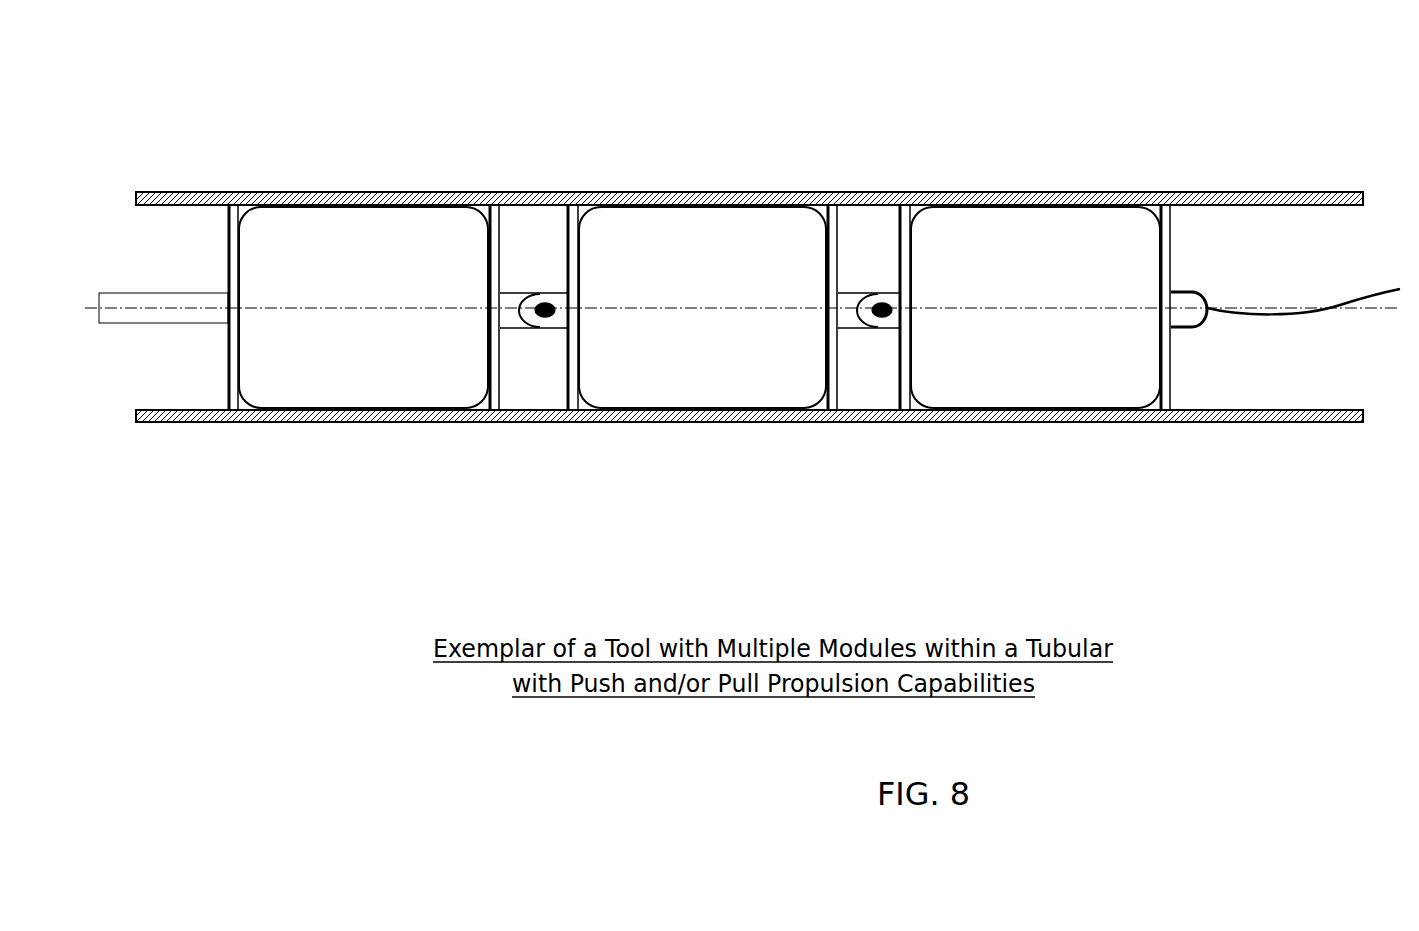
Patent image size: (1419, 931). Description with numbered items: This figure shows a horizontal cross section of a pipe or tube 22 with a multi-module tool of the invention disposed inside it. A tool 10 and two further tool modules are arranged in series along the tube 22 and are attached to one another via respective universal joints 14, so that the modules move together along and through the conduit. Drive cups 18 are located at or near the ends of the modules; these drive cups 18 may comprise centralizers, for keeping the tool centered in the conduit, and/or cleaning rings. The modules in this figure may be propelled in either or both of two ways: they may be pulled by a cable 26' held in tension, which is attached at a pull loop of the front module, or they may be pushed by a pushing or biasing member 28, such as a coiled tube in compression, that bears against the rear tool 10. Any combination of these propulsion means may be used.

The tool 10 is at (366, 382).
The universal joint 14 is at (548, 287).
The drive cup 18 is at (234, 190).
The tube 22 is at (1268, 190).
The cable 26' is at (1303, 411).
The pushing or biasing member 28 is at (138, 290).